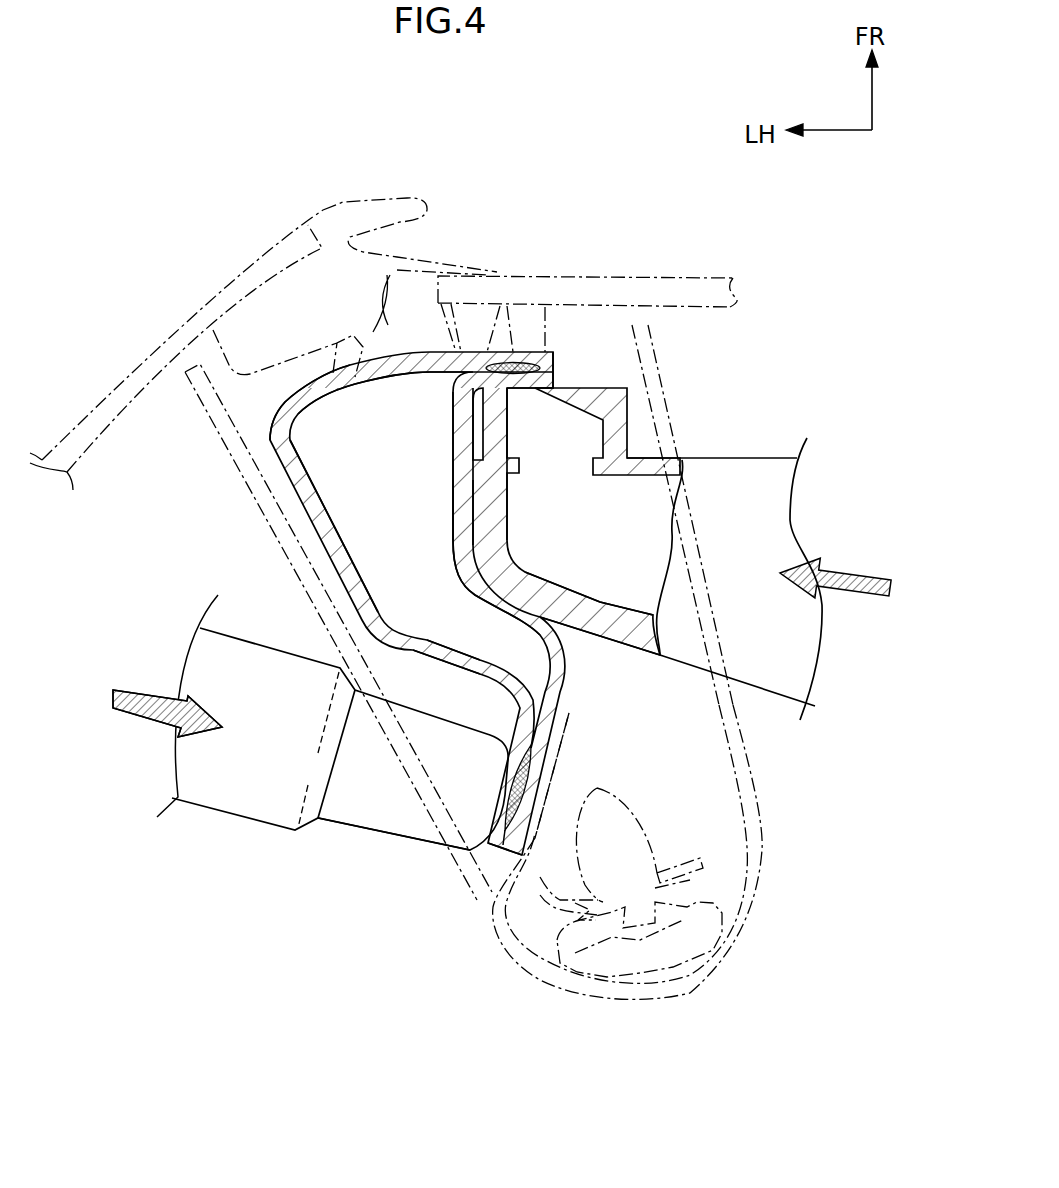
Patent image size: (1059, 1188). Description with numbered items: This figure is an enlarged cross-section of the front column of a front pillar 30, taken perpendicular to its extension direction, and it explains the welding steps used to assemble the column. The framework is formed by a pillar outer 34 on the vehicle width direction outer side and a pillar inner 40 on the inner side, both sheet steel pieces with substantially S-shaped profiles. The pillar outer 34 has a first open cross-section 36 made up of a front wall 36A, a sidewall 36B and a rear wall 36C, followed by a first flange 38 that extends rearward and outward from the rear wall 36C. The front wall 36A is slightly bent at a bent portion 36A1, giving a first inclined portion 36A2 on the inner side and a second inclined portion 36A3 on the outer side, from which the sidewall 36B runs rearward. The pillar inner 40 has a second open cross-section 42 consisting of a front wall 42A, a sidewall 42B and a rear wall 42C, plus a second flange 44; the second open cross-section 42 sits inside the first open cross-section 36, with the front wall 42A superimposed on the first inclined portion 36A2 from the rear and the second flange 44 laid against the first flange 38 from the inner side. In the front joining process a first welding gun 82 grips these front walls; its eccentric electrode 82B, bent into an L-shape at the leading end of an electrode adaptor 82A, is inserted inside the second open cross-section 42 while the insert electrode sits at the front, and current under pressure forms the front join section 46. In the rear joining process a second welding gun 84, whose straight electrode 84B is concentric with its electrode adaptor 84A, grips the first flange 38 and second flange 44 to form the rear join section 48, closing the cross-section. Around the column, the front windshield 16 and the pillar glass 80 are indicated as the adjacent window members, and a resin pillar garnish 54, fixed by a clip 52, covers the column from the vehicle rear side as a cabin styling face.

The front windshield 16 is at (650, 277).
The front pillar 30 is at (518, 185).
The pillar outer 34 is at (266, 458).
The first open cross-section 36 is at (303, 508).
The front wall 36A is at (357, 387).
The bent portion 36A1 is at (395, 352).
The first inclined portion 36A2 is at (453, 352).
The second inclined portion 36A3 is at (310, 378).
The sidewall 36B is at (317, 540).
The rear wall 36C is at (418, 655).
The first flange 38 is at (492, 850).
The pillar inner 40 is at (584, 673).
The second open cross-section 42 is at (451, 503).
The front wall 42A is at (573, 367).
The sidewall 42B is at (455, 540).
The rear wall 42C is at (497, 627).
The second flange 44 is at (515, 860).
The front join section 46 is at (516, 360).
The rear join section 48 is at (528, 777).
The clip 52 is at (640, 813).
The pillar garnish 54 is at (697, 980).
The pillar glass 80 is at (127, 365).
The first welding gun 82 is at (792, 455).
The electrode adaptor 82A is at (728, 458).
The eccentric electrode 82B is at (627, 420).
The second welding gun 84 is at (197, 807).
The electrode adaptor 84A is at (253, 822).
The straight electrode 84B is at (393, 838).